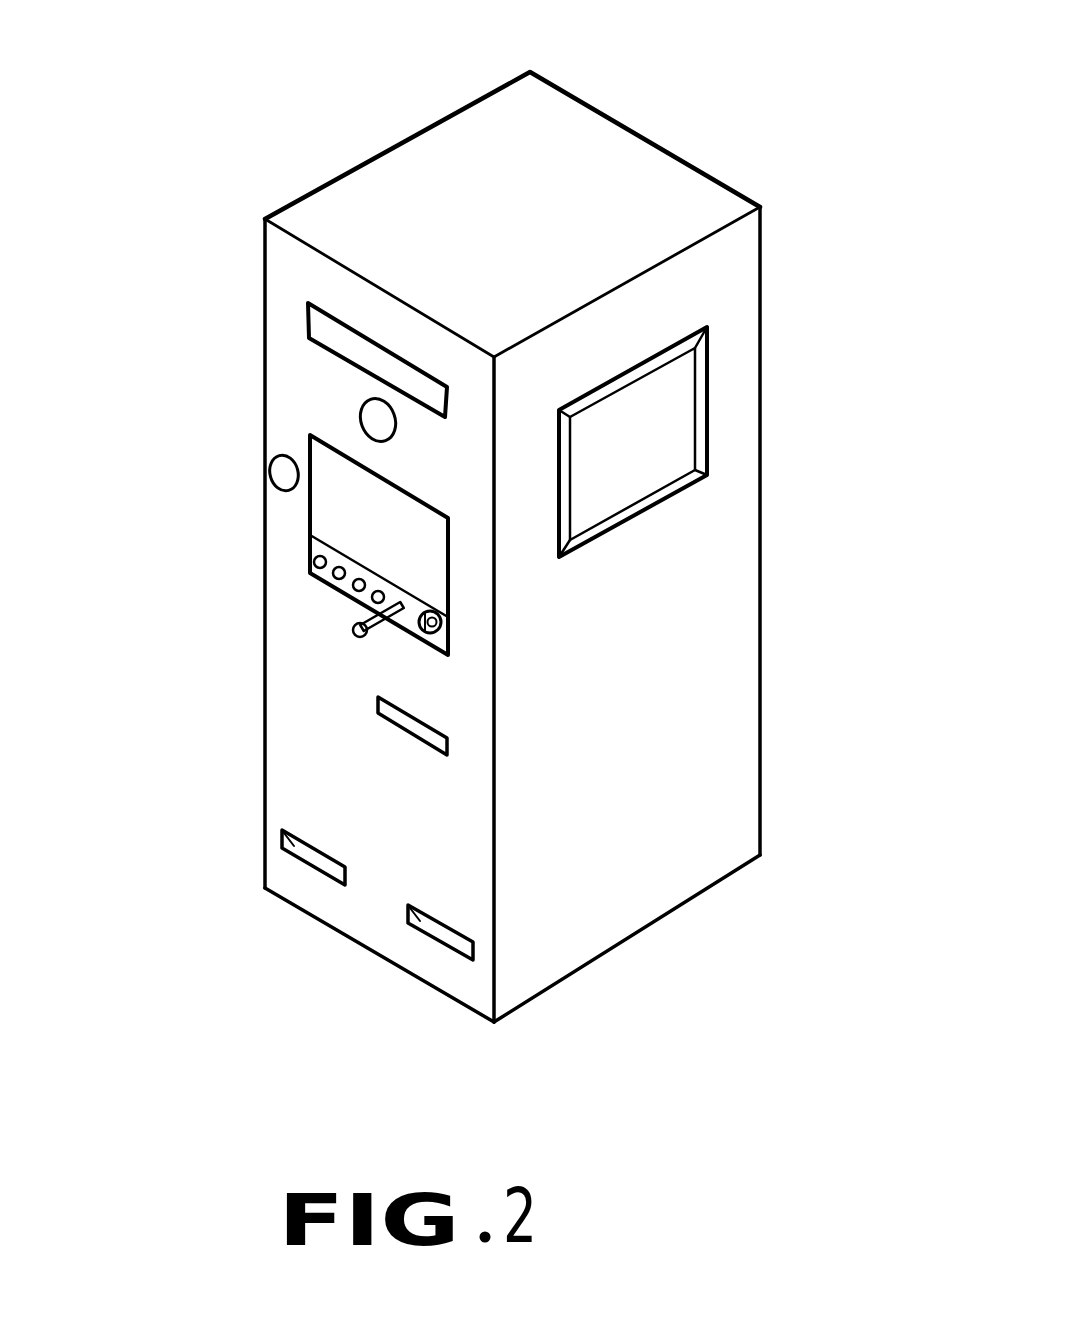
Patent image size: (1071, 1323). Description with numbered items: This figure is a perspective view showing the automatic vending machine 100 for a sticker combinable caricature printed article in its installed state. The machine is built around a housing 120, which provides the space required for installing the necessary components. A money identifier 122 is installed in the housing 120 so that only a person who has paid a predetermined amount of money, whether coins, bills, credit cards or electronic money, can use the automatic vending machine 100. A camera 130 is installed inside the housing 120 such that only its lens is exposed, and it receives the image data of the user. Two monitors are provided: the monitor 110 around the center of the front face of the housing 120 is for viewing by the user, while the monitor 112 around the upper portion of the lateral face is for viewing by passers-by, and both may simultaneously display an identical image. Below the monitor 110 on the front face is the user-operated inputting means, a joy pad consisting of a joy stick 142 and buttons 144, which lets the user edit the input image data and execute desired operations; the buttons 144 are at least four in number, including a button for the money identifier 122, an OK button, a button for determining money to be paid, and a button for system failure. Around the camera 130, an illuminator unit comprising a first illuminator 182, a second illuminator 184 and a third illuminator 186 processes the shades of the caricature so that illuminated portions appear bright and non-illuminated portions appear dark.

The automatic vending machine 100 is at (566, 511).
The monitor 110 is at (413, 535).
The monitor 112 is at (663, 398).
The housing 120 is at (692, 752).
The money identifier 122 is at (425, 735).
The camera 130 is at (367, 413).
The joy stick 142 is at (352, 633).
The buttons 144 is at (310, 575).
The first illuminator 182 is at (328, 327).
The second illuminator 184 is at (270, 472).
The third illuminator 186 is at (433, 643).